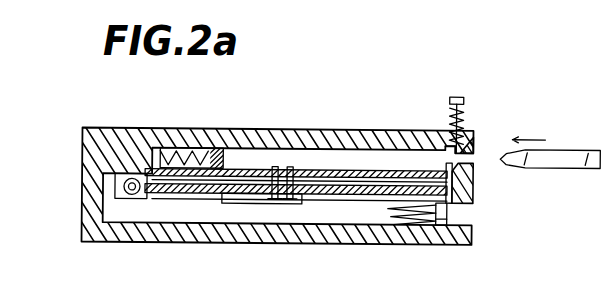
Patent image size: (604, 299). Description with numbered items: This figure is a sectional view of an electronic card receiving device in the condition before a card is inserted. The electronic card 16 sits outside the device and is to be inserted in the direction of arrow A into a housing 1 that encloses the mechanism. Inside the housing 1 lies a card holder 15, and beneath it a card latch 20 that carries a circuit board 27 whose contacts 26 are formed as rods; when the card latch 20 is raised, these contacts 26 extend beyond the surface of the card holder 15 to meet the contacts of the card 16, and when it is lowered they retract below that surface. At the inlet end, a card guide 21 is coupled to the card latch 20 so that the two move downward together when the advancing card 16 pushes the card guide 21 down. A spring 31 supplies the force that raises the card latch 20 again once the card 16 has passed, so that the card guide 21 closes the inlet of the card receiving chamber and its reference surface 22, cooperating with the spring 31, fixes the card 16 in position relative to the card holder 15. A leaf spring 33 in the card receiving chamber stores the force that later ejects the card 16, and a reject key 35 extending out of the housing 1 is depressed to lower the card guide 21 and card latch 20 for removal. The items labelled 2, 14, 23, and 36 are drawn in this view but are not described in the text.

The housing 1 is at (95, 231).
The apparatus 2 is at (600, 196).
The pin 14 is at (441, 224).
The card holder 15 is at (340, 170).
The electronic card 16 is at (579, 146).
The card latch 20 is at (338, 198).
The card guide 21 is at (470, 160).
The reference surface 22 is at (432, 148).
The pivot pin 23 is at (124, 187).
The contacts 26 is at (290, 165).
The circuit board 27 is at (225, 203).
The spring 31 is at (397, 222).
The leaf spring 33 is at (187, 147).
The reject key 35 is at (464, 97).
The wedge 36 is at (474, 141).